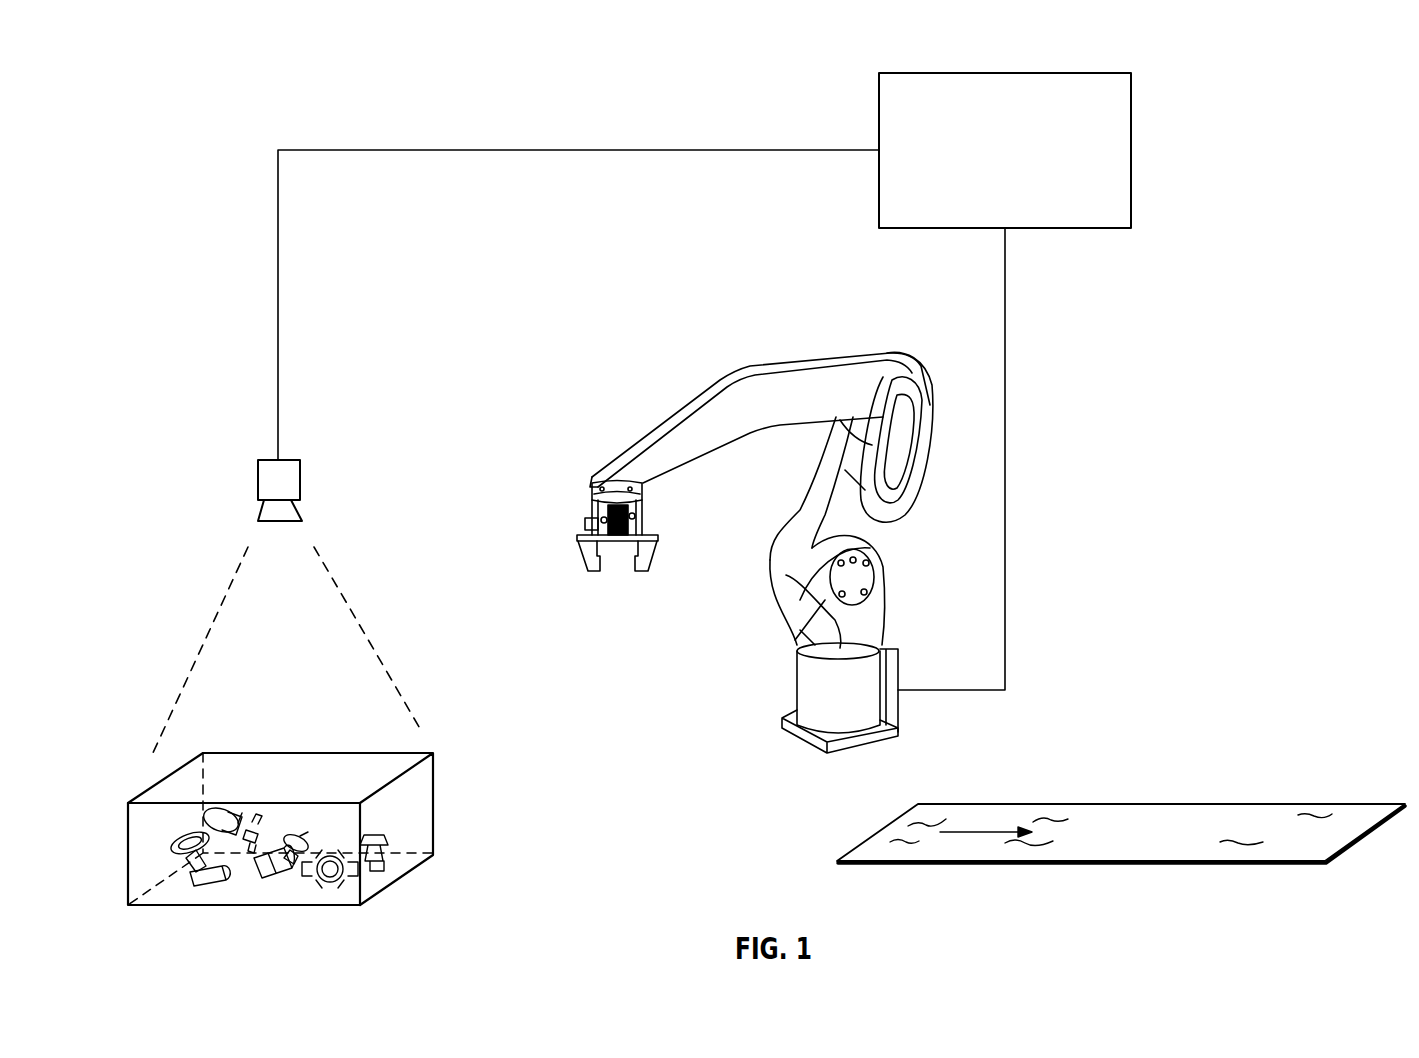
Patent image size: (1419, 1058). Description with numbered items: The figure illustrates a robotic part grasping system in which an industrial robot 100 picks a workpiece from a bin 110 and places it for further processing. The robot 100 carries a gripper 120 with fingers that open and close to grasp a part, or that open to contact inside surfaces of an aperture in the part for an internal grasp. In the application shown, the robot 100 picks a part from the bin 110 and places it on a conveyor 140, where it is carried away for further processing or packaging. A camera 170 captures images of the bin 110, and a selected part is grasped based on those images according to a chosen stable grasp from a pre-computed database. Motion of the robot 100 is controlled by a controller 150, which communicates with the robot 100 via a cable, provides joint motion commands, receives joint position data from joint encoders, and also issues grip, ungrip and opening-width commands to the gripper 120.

The industrial robot 100 is at (780, 674).
The bin 110 is at (402, 878).
The gripper 120 is at (670, 547).
The conveyor 140 is at (973, 803).
The controller 150 is at (1092, 72).
The camera 170 is at (268, 460).